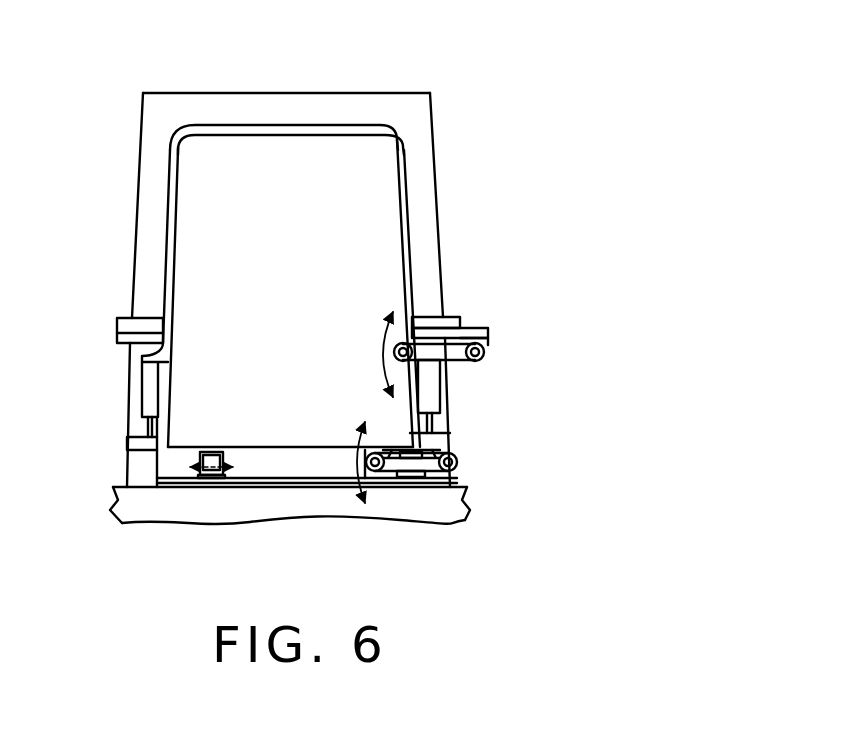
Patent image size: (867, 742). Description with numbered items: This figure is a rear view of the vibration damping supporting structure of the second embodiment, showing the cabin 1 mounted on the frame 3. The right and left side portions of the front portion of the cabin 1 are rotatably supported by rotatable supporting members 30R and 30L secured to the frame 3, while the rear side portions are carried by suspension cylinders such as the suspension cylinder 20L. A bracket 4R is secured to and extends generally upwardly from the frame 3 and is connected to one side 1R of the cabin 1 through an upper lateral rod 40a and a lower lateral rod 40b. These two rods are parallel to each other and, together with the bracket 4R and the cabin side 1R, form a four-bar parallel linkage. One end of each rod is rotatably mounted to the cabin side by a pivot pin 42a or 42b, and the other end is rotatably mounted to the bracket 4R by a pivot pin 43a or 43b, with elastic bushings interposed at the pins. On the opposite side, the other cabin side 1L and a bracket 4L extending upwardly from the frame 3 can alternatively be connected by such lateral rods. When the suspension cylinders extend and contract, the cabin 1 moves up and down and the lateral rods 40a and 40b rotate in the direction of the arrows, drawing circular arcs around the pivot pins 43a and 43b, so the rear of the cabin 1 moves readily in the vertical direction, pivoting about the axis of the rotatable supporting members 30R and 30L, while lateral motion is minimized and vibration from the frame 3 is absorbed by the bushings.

The cabin 1 is at (340, 127).
The other side of the cabin 1L is at (165, 293).
The one side of the cabin 1R is at (408, 185).
The frame 3 is at (133, 503).
The bracket 4L is at (128, 420).
The bracket 4R is at (450, 417).
The suspension cylinder 20L is at (150, 388).
The rotatable supporting member 30L is at (190, 467).
The rotatable supporting member 30R is at (433, 483).
The upper lateral rod 40a is at (438, 350).
The lower lateral rod 40b is at (418, 478).
The pivot pin 42a is at (402, 337).
The pivot pin 42b is at (378, 480).
The pivot pin 43a is at (484, 349).
The pivot pin 43b is at (458, 465).